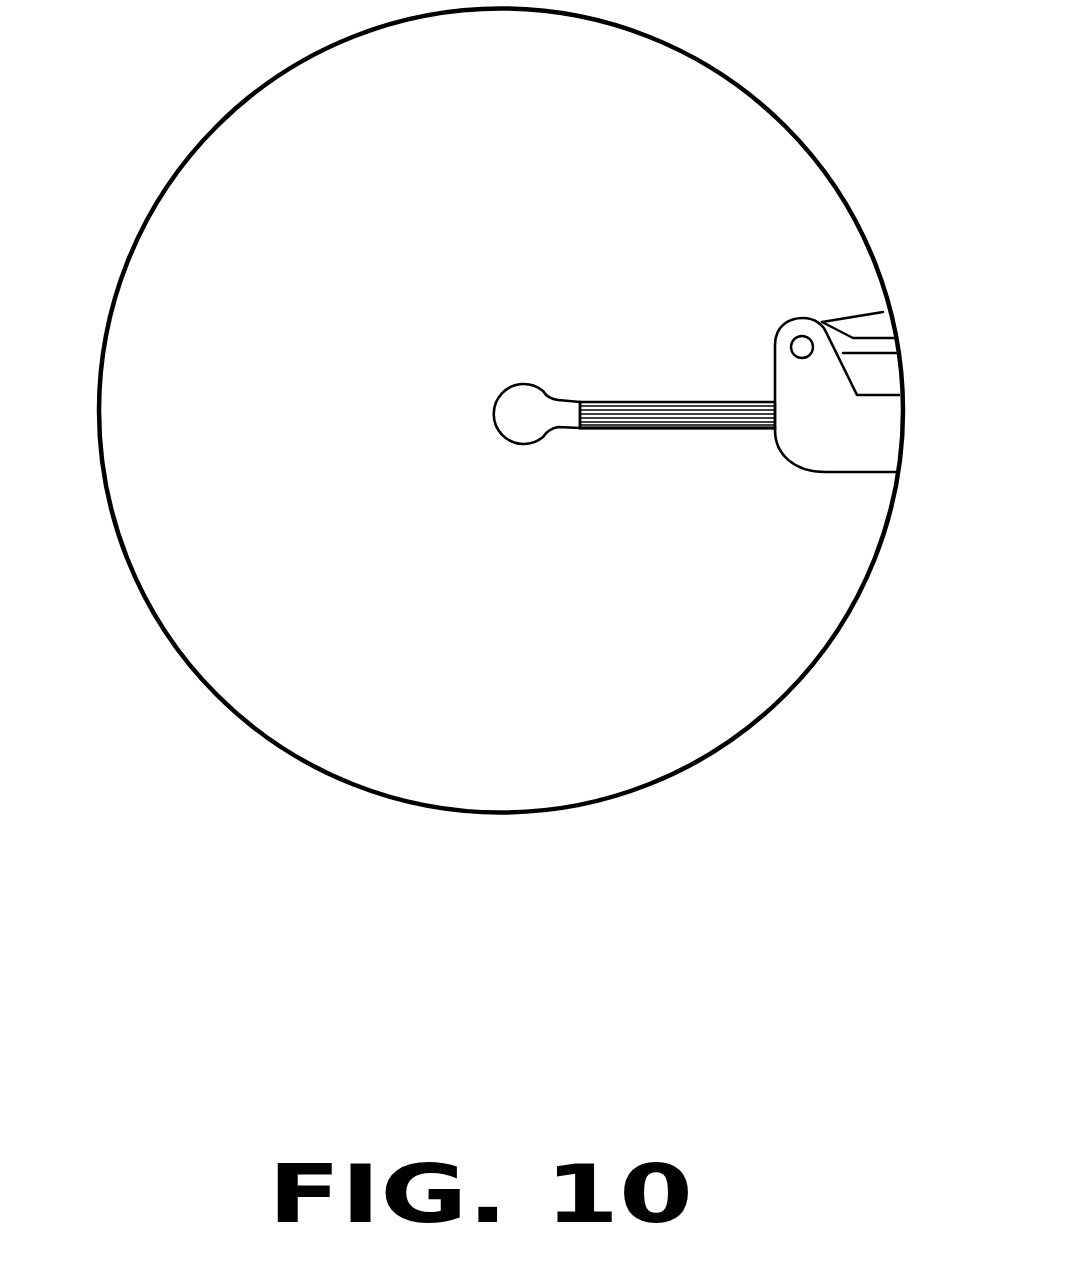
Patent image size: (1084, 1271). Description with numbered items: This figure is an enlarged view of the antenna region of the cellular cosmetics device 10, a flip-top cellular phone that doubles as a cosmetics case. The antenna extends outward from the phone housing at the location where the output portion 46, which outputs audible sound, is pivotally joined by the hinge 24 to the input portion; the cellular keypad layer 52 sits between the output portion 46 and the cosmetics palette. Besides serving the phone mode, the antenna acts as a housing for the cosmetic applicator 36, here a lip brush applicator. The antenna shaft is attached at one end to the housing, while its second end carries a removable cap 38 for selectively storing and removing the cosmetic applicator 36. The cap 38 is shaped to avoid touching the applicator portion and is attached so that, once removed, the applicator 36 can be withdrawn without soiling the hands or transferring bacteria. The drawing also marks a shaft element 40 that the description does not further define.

The cellular cosmetics device 10 is at (380, 370).
The hinge 24 is at (791, 348).
The cosmetic applicator 36 is at (590, 403).
The removable cap 38 is at (552, 432).
The shaft 40 is at (665, 428).
The output portion 46 is at (873, 353).
The cellular keypad layer 52 is at (824, 324).